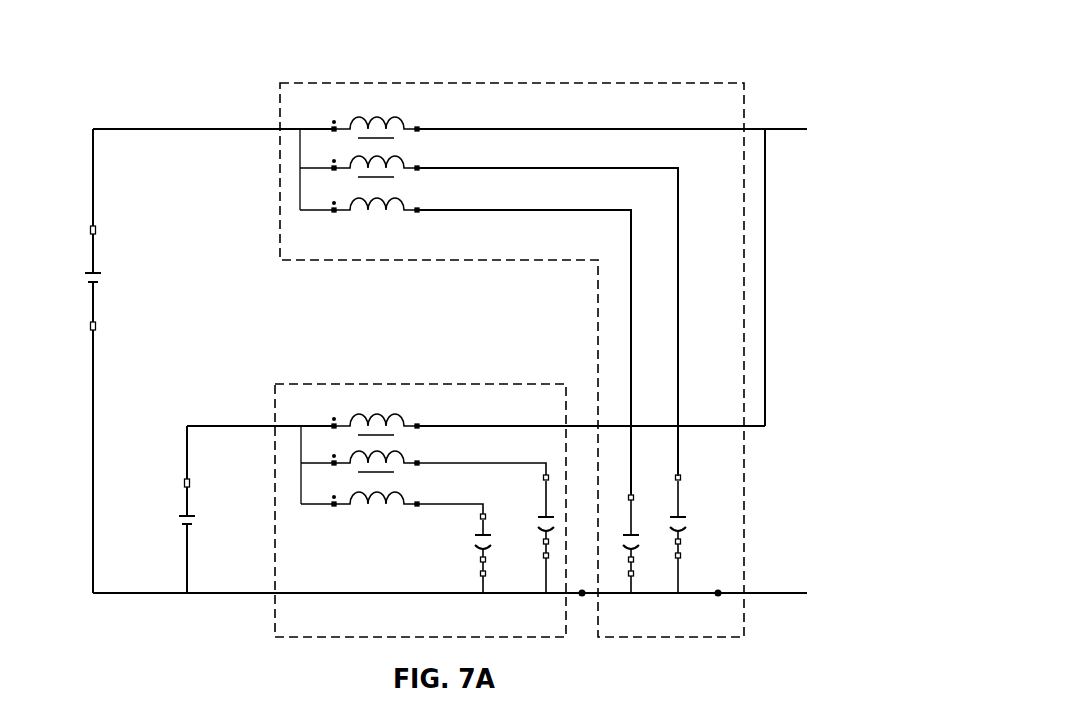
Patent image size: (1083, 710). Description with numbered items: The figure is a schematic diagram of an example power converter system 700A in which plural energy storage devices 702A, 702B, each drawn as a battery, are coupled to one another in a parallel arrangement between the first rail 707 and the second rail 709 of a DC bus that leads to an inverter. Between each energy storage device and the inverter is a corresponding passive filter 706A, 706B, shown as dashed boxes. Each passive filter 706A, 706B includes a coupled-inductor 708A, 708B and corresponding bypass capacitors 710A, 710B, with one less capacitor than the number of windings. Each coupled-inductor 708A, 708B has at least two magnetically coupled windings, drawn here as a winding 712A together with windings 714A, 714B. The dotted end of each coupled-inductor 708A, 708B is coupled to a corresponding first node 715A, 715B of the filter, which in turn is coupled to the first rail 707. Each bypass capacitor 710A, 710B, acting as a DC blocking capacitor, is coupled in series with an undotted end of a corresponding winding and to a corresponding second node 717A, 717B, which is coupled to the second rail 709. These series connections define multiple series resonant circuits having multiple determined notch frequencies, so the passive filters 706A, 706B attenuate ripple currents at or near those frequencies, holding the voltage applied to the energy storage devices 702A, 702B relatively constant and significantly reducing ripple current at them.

The power converter system 700A is at (815, 65).
The energy storage device 702A is at (87, 279).
The energy storage device 702B is at (192, 515).
The passive filter 706A is at (602, 83).
The passive filter 706B is at (478, 384).
The first rail 707 is at (800, 130).
The coupled-inductor 708A is at (364, 108).
The coupled-inductor 708B is at (365, 408).
The second rail 709 is at (777, 594).
The bypass capacitor 710A is at (688, 521).
The bypass capacitor 710B is at (488, 542).
The winding 712A is at (424, 121).
The winding 714A is at (436, 158).
The winding 714B is at (440, 197).
The first node 715A is at (253, 128).
The first node 715B is at (253, 426).
The second node 717A is at (718, 596).
The second node 717B is at (582, 596).